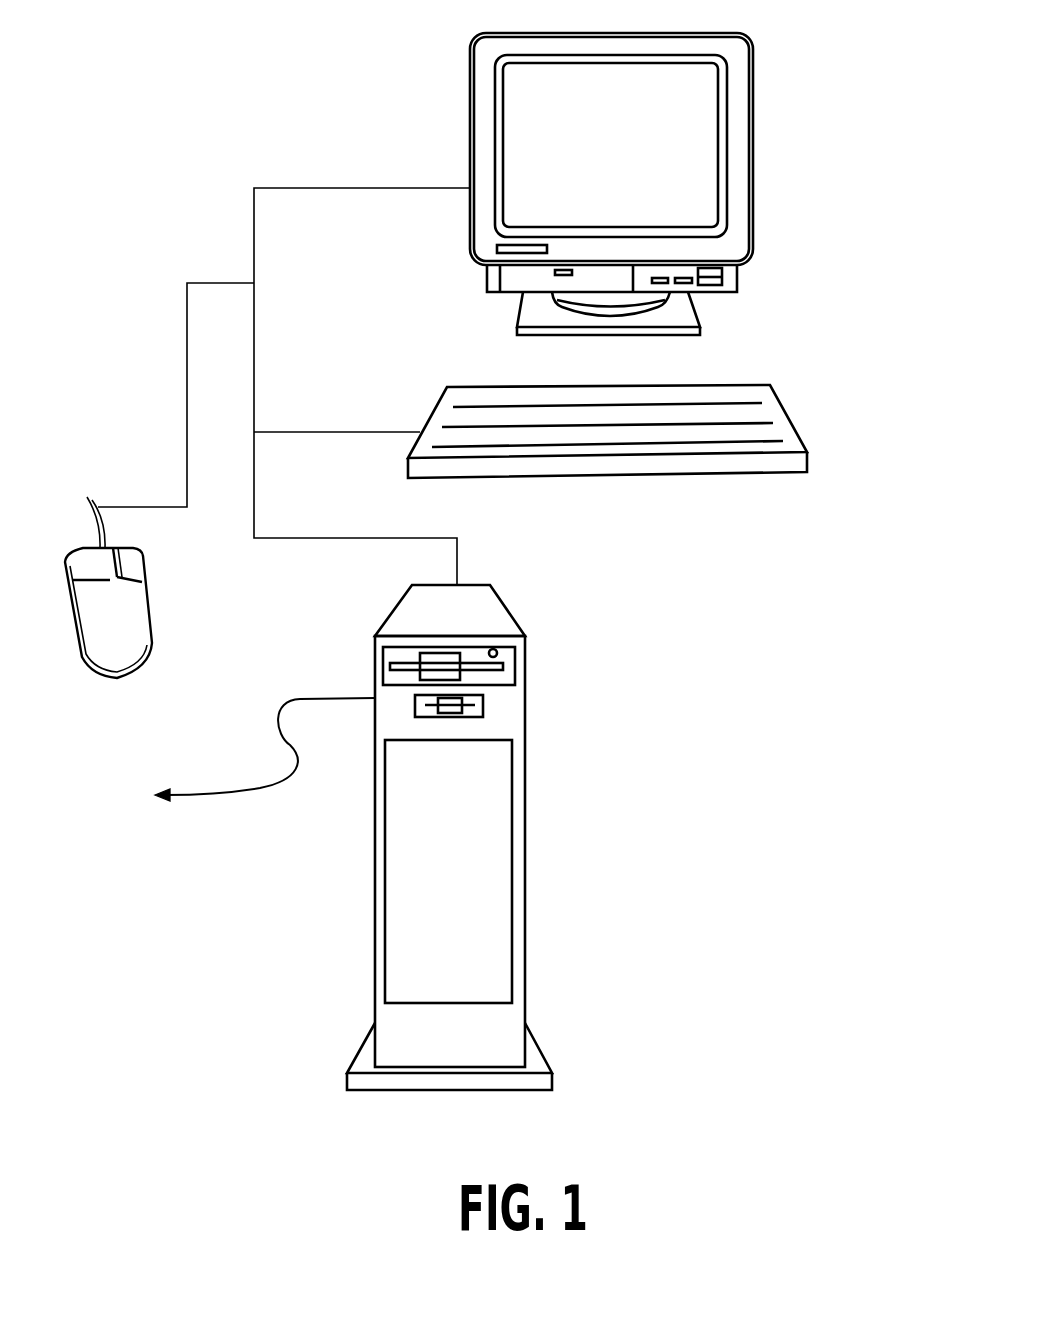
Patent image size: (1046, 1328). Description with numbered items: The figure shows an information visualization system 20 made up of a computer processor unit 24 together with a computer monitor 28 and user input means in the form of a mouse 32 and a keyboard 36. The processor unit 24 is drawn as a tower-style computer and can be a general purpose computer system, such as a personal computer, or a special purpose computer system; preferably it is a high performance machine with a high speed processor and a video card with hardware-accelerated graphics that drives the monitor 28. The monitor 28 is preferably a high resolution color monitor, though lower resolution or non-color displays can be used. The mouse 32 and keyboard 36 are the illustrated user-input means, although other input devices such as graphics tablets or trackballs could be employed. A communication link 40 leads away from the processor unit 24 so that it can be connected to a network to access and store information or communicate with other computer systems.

The information visualization system 20 is at (853, 58).
The computer processor unit 24 is at (542, 805).
The computer monitor 28 is at (773, 173).
The mouse 32 is at (165, 615).
The keyboard 36 is at (808, 430).
The communication link 40 is at (268, 795).